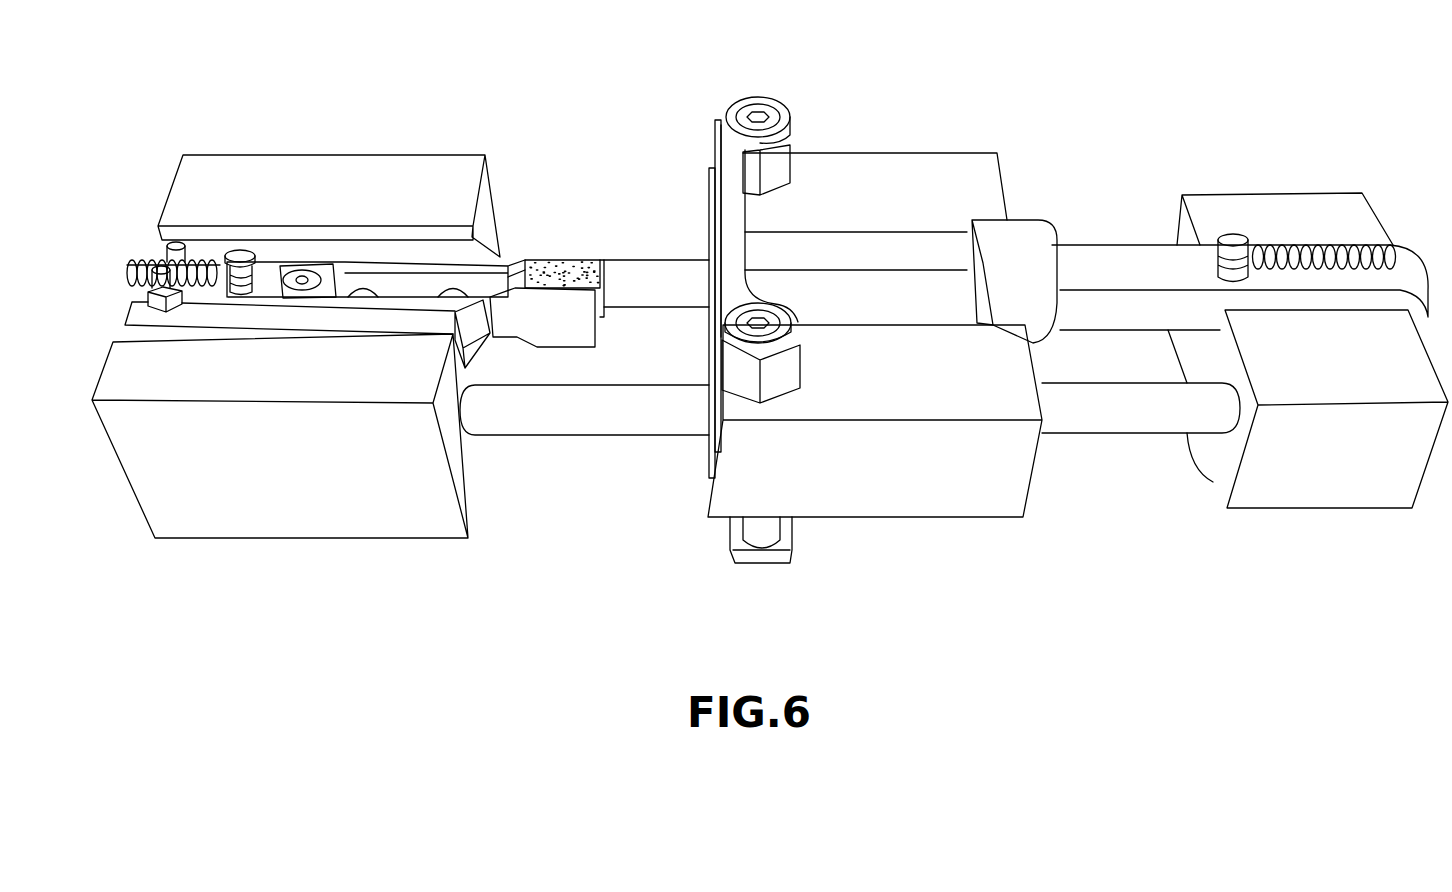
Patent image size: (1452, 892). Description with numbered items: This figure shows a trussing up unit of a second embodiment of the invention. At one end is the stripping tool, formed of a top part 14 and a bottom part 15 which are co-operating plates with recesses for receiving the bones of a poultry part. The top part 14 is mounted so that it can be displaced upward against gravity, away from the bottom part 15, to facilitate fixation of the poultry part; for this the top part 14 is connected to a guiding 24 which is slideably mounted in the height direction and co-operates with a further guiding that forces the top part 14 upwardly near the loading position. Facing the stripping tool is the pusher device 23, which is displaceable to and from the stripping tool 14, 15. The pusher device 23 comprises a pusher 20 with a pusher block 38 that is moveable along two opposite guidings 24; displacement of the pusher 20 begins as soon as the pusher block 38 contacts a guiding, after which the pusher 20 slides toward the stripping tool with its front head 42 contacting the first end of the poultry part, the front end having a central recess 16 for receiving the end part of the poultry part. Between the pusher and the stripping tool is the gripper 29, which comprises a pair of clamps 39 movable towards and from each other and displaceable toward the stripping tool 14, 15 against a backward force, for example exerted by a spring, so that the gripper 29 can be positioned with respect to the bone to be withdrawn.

The top part of stripping tool 14 is at (707, 443).
The bottom part of stripping tool 15 is at (722, 130).
The central recess 16 is at (980, 290).
The pusher 20 is at (1115, 258).
The pusher device 23 is at (1260, 563).
The guiding 24 is at (1137, 400).
The gripper 29 is at (607, 237).
The pusher block 38 is at (1328, 447).
The clamps 39 is at (535, 273).
The front head of pusher 42 is at (980, 263).